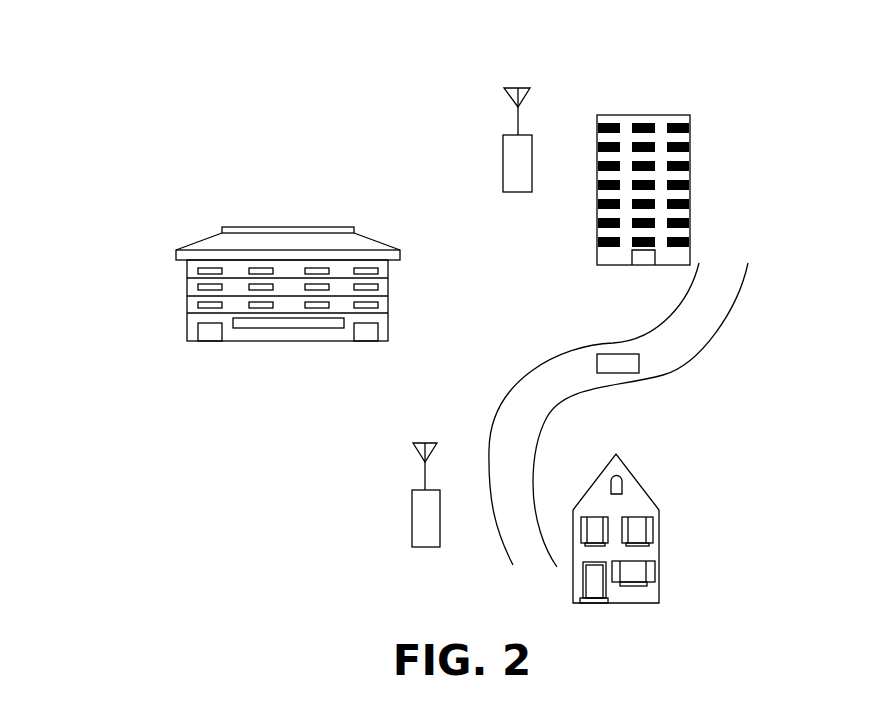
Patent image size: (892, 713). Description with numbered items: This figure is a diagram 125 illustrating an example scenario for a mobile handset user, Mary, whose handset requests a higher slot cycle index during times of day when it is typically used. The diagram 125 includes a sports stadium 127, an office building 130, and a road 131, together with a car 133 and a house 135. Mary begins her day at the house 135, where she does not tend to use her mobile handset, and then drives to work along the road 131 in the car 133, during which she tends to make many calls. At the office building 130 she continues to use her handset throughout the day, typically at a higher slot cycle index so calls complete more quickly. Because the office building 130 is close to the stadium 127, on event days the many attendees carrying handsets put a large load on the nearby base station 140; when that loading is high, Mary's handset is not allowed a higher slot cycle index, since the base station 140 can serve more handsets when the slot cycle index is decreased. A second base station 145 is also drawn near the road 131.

The diagram 125 is at (158, 140).
The sports stadium 127 is at (300, 225).
The office building 130 is at (627, 113).
The road 131 is at (733, 318).
The car 133 is at (597, 351).
The house 135 is at (642, 487).
The base station 140 is at (510, 87).
The base station 145 is at (418, 443).